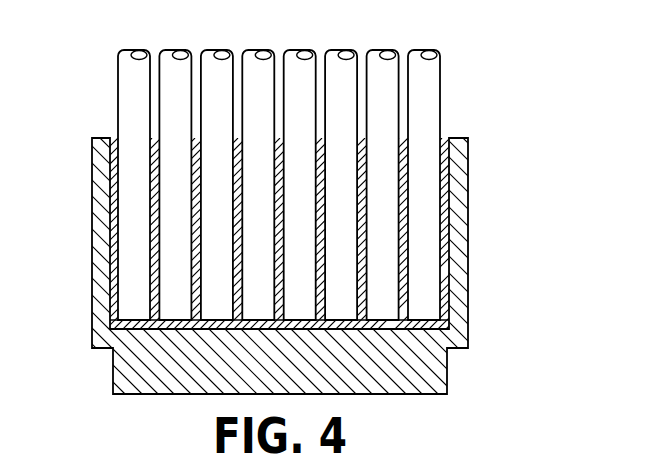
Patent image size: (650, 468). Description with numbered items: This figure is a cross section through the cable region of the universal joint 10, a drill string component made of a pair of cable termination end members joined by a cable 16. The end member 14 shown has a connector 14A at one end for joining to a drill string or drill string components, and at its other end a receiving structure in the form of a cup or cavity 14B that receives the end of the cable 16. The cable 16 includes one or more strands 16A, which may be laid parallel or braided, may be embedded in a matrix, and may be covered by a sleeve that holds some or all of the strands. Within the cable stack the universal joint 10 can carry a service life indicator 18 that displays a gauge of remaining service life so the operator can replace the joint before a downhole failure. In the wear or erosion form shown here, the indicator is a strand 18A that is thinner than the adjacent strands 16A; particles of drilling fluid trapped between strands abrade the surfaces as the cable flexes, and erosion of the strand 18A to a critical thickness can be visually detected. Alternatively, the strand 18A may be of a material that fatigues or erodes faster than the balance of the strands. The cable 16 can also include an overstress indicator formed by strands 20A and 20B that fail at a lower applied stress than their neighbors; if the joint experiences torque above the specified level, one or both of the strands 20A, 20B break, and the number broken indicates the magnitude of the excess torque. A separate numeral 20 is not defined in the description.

The universal joint 10 is at (474, 68).
The end member 14 is at (325, 266).
The connector 14A is at (112, 372).
The cup or cavity 14B is at (92, 243).
The cable 16 is at (279, 160).
The strands 16A is at (432, 50).
The service life indicator 18 is at (106, 107).
The indicator strand 18A is at (350, 50).
The outer layer 20 is at (86, 185).
The strand 20A is at (186, 50).
The strand 20B is at (268, 50).